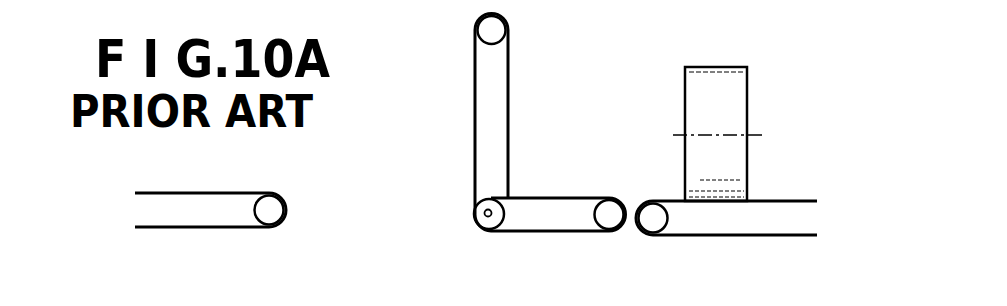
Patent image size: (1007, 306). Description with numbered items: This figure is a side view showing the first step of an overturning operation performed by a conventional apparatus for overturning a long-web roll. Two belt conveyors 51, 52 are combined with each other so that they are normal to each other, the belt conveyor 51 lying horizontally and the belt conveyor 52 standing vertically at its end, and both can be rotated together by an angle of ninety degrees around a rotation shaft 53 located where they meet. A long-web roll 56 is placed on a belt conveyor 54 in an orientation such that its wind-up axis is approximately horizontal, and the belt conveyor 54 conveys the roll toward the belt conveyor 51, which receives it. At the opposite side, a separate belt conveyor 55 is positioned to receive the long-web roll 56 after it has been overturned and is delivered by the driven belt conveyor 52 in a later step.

The belt conveyor 51 is at (562, 196).
The belt conveyor 52 is at (475, 103).
The rotation shaft 53 is at (487, 218).
The belt conveyor 54 is at (737, 237).
The belt conveyor 55 is at (223, 228).
The long-web roll 56 is at (712, 80).